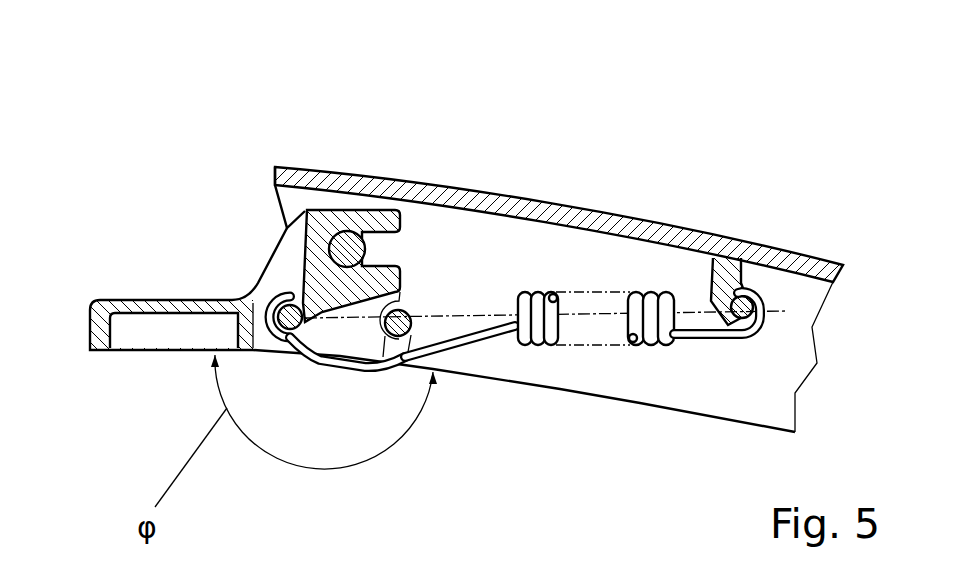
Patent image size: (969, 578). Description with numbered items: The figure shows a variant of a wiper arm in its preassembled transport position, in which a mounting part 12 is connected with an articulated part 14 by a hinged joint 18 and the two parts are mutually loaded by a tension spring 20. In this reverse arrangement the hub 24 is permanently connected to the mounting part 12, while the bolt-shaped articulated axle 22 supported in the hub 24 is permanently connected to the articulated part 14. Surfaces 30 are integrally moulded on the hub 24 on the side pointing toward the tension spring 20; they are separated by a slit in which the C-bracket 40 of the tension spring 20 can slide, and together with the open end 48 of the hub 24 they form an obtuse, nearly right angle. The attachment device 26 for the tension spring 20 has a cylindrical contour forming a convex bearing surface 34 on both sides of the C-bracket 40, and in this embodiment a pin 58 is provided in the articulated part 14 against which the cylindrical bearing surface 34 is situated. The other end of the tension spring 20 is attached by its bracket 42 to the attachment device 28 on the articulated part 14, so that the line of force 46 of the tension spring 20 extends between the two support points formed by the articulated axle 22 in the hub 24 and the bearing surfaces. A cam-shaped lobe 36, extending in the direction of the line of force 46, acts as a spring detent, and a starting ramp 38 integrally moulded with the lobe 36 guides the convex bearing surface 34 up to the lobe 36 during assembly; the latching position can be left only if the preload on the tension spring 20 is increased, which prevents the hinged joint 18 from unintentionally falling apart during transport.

The mounting part 12 is at (122, 312).
The articulated part 14 is at (648, 223).
The hinged joint 18 is at (247, 194).
The tension spring 20 is at (645, 335).
The articulated axle 22 is at (325, 210).
The hub 24 is at (347, 250).
The attachment device 26 is at (280, 306).
The attachment device 28 is at (733, 300).
The surfaces 30 is at (400, 280).
The convex bearing surface 34 is at (360, 353).
The cam-shaped lobe 36 is at (400, 352).
The starting ramp 38 is at (383, 357).
The C-bracket 40 is at (495, 340).
The bracket 42 is at (765, 273).
The line of force 46 is at (437, 318).
The open end 48 is at (383, 250).
The pin 58 is at (415, 400).